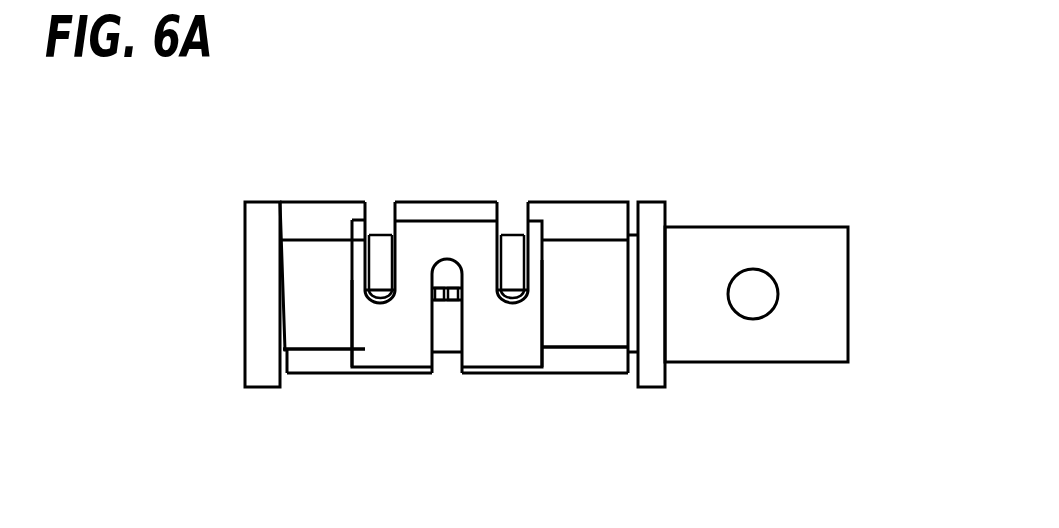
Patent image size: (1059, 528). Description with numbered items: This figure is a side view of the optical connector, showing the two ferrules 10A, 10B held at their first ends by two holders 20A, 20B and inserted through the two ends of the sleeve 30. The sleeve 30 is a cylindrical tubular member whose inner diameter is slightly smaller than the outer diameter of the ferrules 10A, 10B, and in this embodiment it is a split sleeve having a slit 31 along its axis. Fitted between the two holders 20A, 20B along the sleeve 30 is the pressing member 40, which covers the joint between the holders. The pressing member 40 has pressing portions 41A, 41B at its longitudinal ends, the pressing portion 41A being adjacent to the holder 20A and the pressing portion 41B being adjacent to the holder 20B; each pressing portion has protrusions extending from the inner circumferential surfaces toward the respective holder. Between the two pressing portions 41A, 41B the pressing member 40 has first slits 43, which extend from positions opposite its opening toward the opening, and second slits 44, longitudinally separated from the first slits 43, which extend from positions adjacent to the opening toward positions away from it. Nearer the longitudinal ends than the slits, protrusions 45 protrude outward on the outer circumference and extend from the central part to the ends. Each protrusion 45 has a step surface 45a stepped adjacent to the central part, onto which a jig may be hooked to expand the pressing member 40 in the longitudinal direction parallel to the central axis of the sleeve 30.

The ferrule 10A is at (432, 300).
The ferrule 10B is at (462, 300).
The holder 20A is at (262, 278).
The holder 20B is at (686, 292).
The sleeve 30 is at (383, 258).
The slit 31 is at (378, 292).
The pressing member 40 is at (567, 224).
The pressing portion 41A is at (297, 283).
The pressing portion 41B is at (608, 300).
The first slit 43 is at (508, 211).
The second slit 44 is at (447, 362).
The protrusion 45 is at (577, 277).
The step surface 45a is at (353, 295).